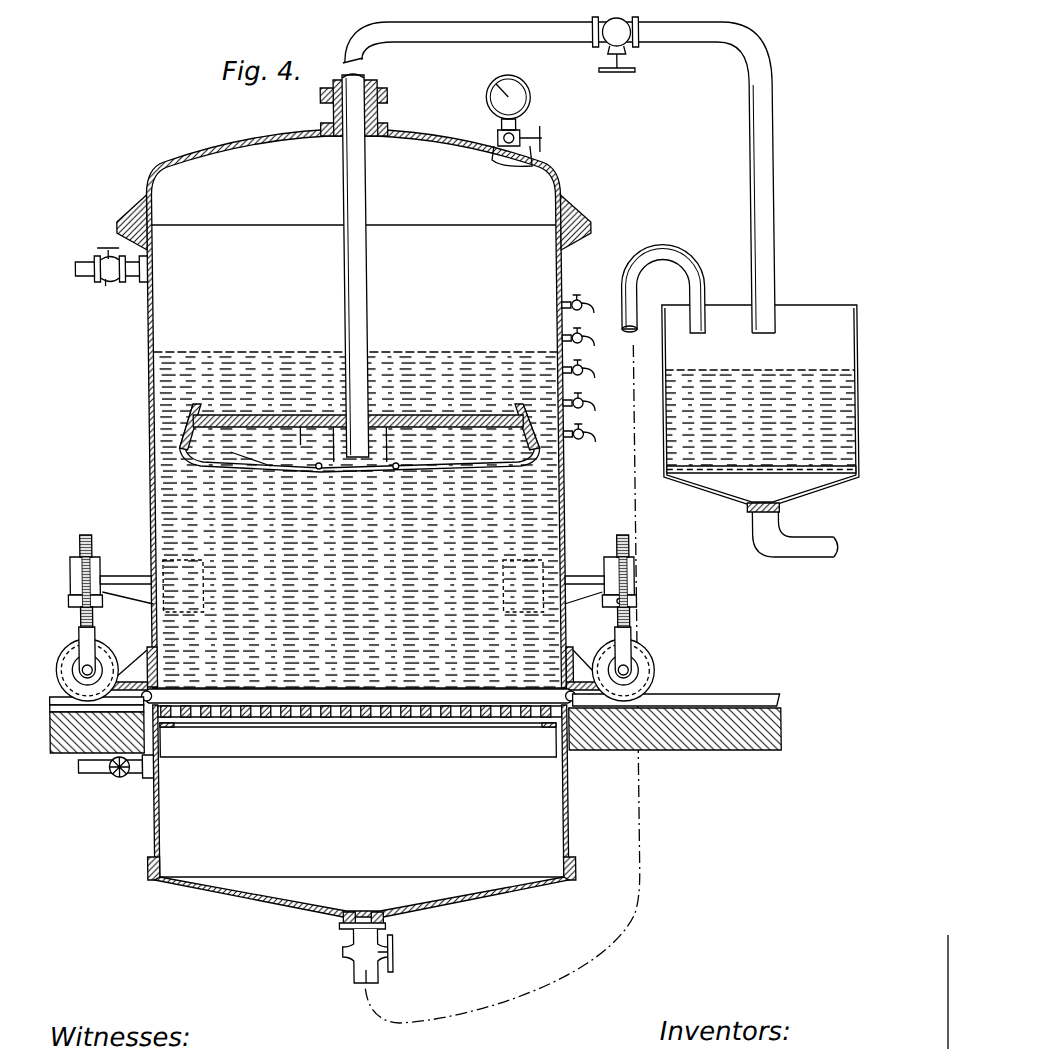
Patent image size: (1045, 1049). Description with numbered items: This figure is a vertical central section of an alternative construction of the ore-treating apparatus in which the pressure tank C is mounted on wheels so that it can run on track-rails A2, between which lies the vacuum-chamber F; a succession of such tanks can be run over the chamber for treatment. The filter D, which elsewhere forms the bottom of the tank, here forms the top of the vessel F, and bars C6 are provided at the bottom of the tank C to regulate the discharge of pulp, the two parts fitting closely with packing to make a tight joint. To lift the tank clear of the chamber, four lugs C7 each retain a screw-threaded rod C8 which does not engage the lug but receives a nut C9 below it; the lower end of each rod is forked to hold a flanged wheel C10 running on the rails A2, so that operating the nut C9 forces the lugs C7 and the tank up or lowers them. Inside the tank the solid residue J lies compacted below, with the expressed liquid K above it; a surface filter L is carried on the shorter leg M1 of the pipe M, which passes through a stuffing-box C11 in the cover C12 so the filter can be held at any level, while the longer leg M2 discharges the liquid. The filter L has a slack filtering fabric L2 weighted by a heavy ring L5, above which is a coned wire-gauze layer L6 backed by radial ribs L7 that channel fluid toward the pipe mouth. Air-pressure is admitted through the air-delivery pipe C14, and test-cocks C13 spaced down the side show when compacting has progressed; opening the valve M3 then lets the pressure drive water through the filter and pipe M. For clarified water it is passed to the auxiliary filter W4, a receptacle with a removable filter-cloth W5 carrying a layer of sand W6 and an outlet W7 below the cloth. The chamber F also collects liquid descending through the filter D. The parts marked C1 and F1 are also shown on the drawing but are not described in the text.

The tank C is at (149, 491).
The valve C1 is at (107, 742).
The bars C6 is at (332, 690).
The lugs C7 is at (70, 580).
The screw-threaded rod C8 is at (78, 540).
The nut C9 is at (68, 605).
The wheel C10 is at (80, 655).
The stuffing-box C11 is at (383, 108).
The top or cover C12 is at (219, 160).
The test-cocks C13 is at (579, 355).
The air-delivery pipe C14 is at (109, 275).
The expressed liquid K is at (357, 520).
The solid residue J is at (353, 586).
The surface filter L is at (359, 433).
The slack layer of filtering fabric L2 is at (398, 466).
The heavy ring L5 is at (320, 463).
The layer of wire-gauze L6 is at (250, 448).
The radial ribs L7 is at (290, 440).
The pipe M is at (557, 41).
The shorter leg of pipe M1 is at (358, 300).
The longer leg of pipe M2 is at (776, 152).
The valve M3 is at (621, 72).
The auxiliary filter W4 is at (663, 353).
The removable filter-cloth W5 is at (717, 472).
The layer of sand W6 is at (760, 405).
The outlet W7 is at (792, 545).
The track-rails A2 is at (679, 702).
The filter D is at (424, 718).
The vacuum-chamber F is at (361, 844).
The valve F1 is at (105, 796).